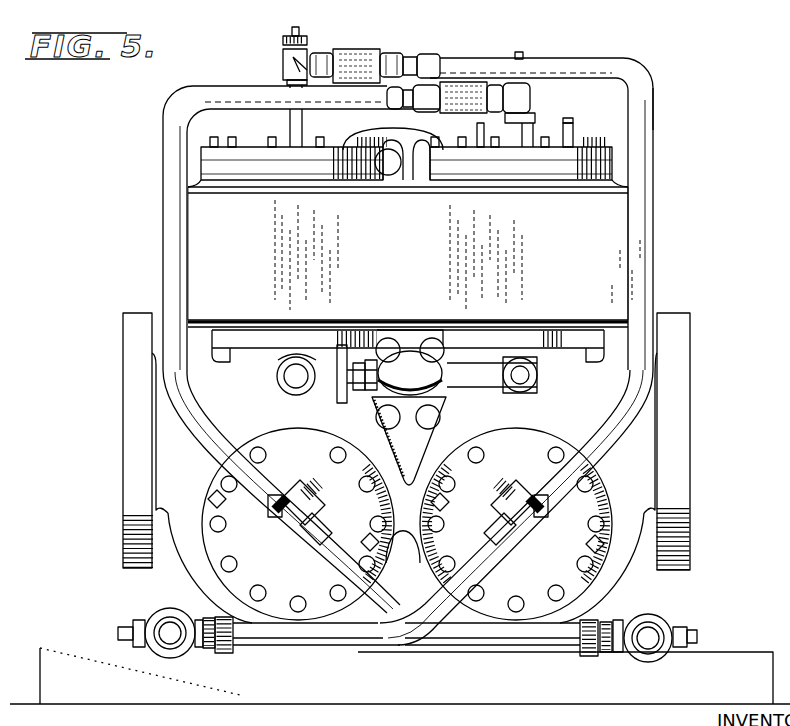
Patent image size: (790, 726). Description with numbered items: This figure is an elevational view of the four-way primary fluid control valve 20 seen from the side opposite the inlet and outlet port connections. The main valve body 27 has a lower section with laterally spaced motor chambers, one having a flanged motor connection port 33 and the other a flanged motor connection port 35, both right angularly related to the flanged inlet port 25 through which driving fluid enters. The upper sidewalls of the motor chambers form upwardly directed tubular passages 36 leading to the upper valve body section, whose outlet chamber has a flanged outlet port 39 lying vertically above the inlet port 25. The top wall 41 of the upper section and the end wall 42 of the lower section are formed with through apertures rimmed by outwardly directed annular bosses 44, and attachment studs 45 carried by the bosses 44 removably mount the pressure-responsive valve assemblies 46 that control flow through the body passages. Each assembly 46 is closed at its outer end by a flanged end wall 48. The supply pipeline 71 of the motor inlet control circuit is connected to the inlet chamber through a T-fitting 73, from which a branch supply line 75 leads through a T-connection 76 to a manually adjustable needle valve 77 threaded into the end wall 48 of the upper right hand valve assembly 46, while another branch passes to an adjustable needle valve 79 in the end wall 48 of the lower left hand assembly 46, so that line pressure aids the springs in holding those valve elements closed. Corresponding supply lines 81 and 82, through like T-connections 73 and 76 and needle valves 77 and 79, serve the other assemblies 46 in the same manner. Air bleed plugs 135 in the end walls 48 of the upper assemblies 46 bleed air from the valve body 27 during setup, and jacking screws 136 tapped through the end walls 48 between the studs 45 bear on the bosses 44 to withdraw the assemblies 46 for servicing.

The primary fluid control valve 20 is at (655, 118).
The flanged inlet port 25 is at (420, 447).
The main valve body 27 is at (607, 273).
The flanged motor connection port 33 is at (127, 327).
The flanged motor connection port 35 is at (680, 325).
The upwardly directed tubular passages 36 is at (228, 340).
The flanged outlet port 39 is at (409, 172).
The top wall 41 is at (435, 182).
The end wall 42 is at (477, 416).
The annular bosses 44 is at (213, 167).
The attachment studs 45 is at (272, 137).
The pressure-responsive valve assemblies 46 is at (203, 152).
The flanged end wall 48 is at (253, 152).
The supply pipeline 71 is at (652, 627).
The T-fitting 73 is at (193, 647).
The branch supply line 75 is at (170, 213).
The T-connection 76 is at (297, 512).
The manually adjustable needle valve 77 is at (353, 49).
The adjustable needle valve 79 is at (403, 363).
The supply line 81 is at (163, 627).
The supply line 82 is at (638, 212).
The air bleed plugs 135 is at (290, 38).
The jacking screws 136 is at (480, 130).